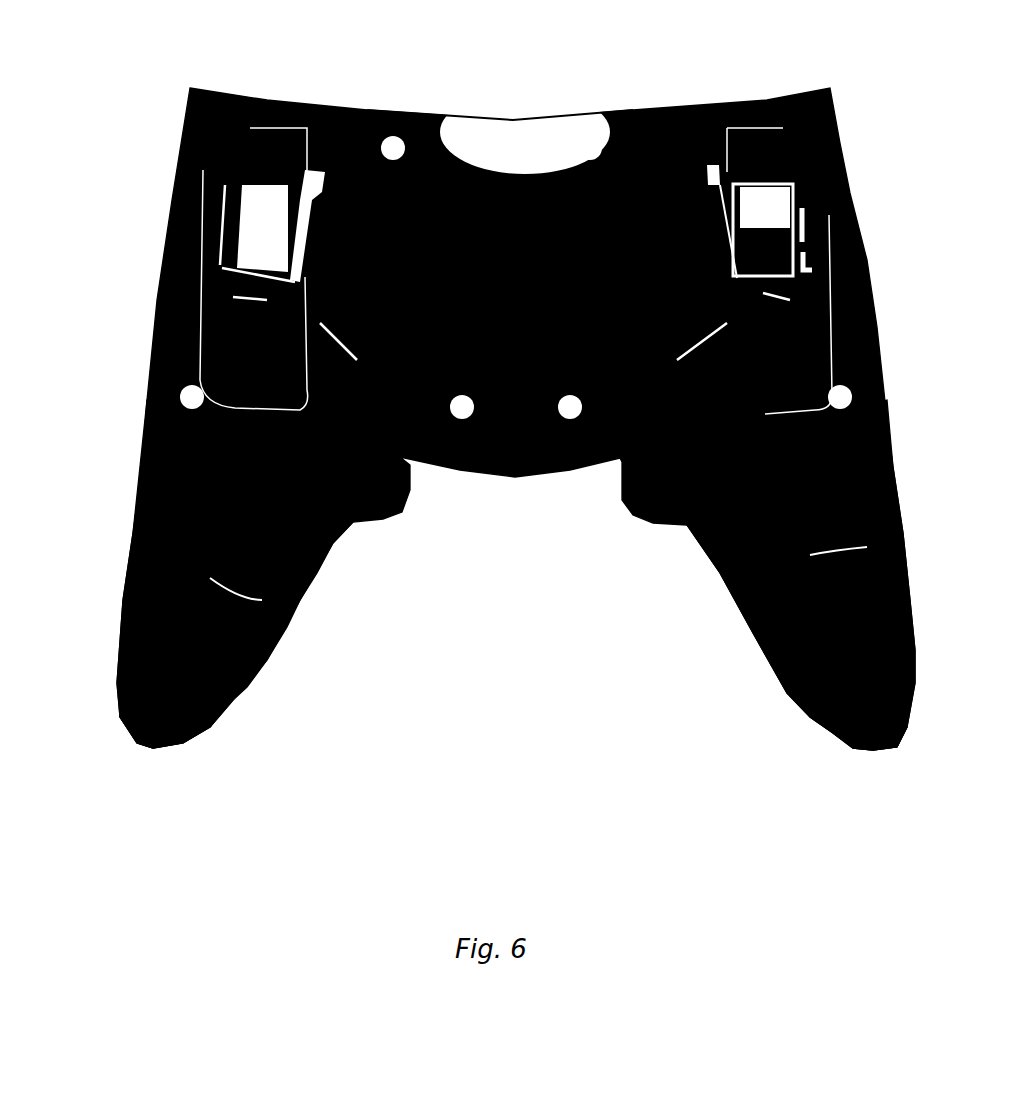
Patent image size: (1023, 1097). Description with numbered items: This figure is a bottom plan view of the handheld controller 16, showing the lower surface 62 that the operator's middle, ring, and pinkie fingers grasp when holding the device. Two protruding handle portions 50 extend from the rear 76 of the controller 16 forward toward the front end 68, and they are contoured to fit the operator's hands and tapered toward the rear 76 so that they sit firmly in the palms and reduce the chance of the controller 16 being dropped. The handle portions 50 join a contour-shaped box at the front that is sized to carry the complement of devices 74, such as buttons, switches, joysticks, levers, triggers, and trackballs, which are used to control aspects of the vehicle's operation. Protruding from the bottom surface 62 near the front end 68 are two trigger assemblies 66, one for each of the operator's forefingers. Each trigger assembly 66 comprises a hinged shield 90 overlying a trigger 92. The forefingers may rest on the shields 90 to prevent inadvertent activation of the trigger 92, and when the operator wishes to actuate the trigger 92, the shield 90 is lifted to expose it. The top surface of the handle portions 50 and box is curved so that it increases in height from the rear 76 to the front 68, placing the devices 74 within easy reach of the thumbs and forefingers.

The handheld controller 16 is at (851, 90).
The handle portions 50 is at (263, 663).
The lower surface 62 is at (300, 600).
The trigger assembly 66 is at (240, 225).
The front end 68 is at (563, 118).
The devices 74 is at (243, 253).
The rear 76 is at (153, 757).
The hinged shield 90 is at (262, 150).
The trigger 92 is at (260, 207).